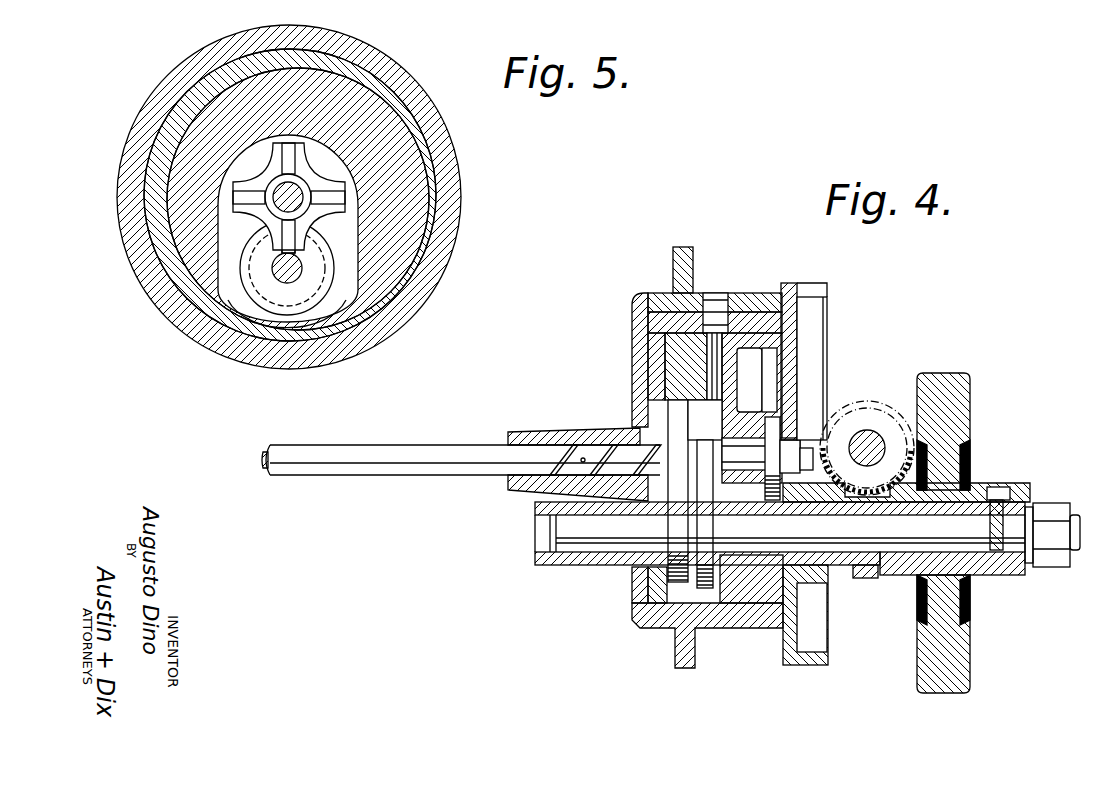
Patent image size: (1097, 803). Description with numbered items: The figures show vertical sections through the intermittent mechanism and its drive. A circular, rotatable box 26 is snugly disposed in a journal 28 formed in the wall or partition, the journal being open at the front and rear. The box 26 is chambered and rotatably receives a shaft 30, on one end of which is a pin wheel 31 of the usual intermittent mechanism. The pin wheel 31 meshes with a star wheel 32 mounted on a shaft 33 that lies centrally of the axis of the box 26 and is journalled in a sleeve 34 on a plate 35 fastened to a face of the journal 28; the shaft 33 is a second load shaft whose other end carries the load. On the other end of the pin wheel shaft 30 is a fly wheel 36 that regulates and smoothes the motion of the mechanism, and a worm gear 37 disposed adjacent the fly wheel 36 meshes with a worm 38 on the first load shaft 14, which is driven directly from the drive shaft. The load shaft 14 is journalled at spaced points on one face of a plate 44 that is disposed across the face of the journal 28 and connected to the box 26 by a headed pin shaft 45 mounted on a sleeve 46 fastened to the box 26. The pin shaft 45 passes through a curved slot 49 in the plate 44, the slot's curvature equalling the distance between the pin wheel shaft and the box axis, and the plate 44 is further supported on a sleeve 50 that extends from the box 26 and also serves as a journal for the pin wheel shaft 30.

In FIG. 4, the load shaft 14 is at (870, 435).
In FIG. 5, the box 26 is at (397, 183).
In FIG. 4, the box 26 is at (676, 362).
In FIG. 5, the journal 28 is at (412, 136).
In FIG. 4, the journal 28 is at (740, 318).
In FIG. 4, the shaft 30 is at (903, 540).
In FIG. 5, the pin wheel 31 is at (247, 303).
In FIG. 4, the pin wheel 31 is at (685, 590).
In FIG. 5, the star wheel 32 is at (263, 222).
In FIG. 4, the star wheel 32 is at (677, 423).
In FIG. 4, the shaft 33 is at (426, 434).
In FIG. 4, the sleeve 34 is at (527, 422).
In FIG. 4, the plate 35 is at (632, 324).
In FIG. 4, the fly wheel 36 is at (947, 647).
In FIG. 4, the worm gear 37 is at (875, 580).
In FIG. 4, the worm 38 is at (897, 477).
In FIG. 4, the plate 44 is at (805, 310).
In FIG. 4, the headed pin shaft 45 is at (817, 417).
In FIG. 4, the sleeve 46 is at (798, 417).
In FIG. 4, the curved slot 49 is at (800, 445).
In FIG. 4, the sleeve 50 is at (827, 595).